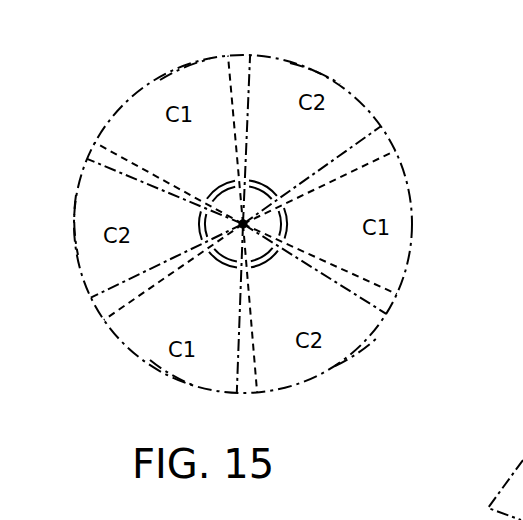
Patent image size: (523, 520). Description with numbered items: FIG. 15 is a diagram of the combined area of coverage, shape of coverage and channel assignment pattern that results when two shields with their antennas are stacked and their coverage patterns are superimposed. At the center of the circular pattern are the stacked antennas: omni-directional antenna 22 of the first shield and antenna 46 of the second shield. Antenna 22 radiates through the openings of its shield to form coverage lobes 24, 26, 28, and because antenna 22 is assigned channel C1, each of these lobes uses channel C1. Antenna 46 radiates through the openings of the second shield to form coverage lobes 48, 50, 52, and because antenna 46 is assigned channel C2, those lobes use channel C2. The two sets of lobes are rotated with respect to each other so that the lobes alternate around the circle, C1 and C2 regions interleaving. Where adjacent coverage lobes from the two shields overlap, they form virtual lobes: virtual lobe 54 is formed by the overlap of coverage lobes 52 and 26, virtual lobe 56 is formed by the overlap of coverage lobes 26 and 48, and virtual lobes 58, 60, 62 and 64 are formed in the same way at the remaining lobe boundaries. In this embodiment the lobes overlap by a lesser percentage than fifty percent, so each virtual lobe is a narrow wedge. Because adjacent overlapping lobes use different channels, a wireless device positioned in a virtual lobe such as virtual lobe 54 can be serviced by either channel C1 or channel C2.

The omni-directional antenna 22 is at (243, 224).
The antenna 46 is at (243, 224).
The coverage lobe 24 is at (172, 378).
The coverage lobe 26 is at (413, 225).
The coverage lobe 28 is at (186, 63).
The coverage lobe 48 is at (356, 358).
The coverage lobe 50 is at (73, 229).
The coverage lobe 52 is at (320, 69).
The virtual lobe 54 is at (368, 150).
The virtual lobe 56 is at (375, 298).
The virtual lobe 58 is at (247, 375).
The virtual lobe 60 is at (112, 303).
The virtual lobe 62 is at (108, 153).
The virtual lobe 64 is at (238, 73).